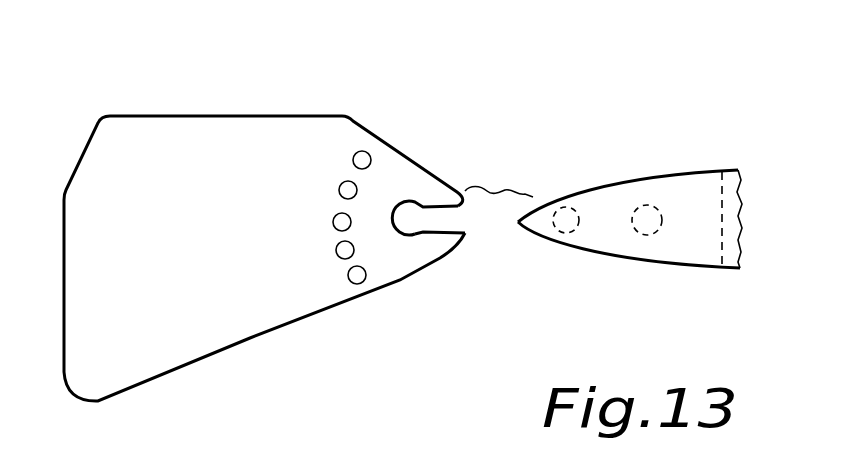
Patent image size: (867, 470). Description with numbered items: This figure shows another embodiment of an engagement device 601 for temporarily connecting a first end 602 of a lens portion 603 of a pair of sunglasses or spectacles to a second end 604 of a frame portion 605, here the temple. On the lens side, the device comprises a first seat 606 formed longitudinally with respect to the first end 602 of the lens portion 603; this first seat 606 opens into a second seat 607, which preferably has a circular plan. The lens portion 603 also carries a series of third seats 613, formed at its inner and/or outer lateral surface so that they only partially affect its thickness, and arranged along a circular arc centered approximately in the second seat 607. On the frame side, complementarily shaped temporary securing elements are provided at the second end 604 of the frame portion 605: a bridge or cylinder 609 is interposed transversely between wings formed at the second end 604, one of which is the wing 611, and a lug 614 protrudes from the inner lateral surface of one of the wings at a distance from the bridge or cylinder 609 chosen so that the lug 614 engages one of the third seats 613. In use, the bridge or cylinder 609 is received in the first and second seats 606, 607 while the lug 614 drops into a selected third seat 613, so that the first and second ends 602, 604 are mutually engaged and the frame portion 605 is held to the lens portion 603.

The engagement device 601 is at (293, 92).
The first end 602 is at (403, 294).
The lens portion 603 is at (193, 140).
The second end 604 is at (564, 268).
The frame portion 605 is at (738, 232).
The first seat 606 is at (440, 222).
The second seat 607 is at (403, 210).
The bridge or cylinder 609 is at (653, 205).
The wing 611 is at (675, 252).
The third seats 613 is at (365, 151).
The lug 614 is at (568, 204).